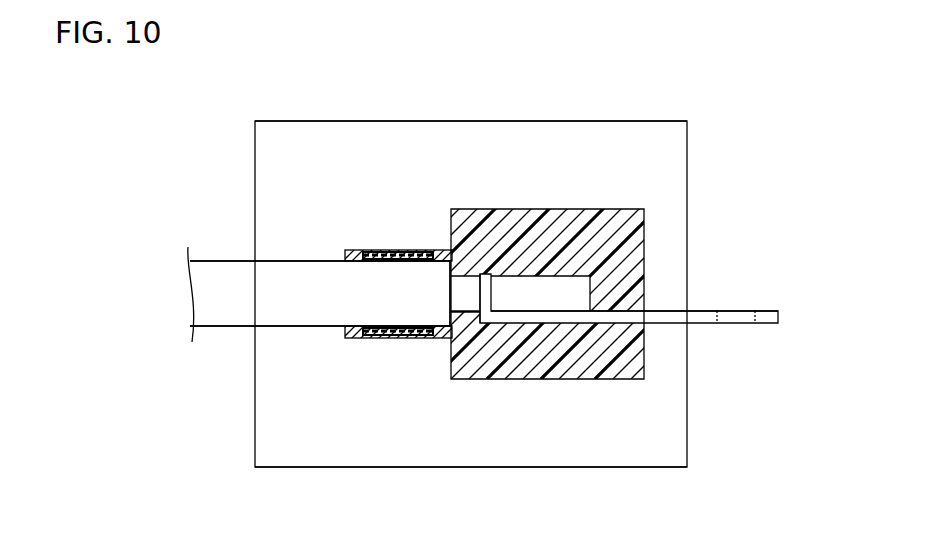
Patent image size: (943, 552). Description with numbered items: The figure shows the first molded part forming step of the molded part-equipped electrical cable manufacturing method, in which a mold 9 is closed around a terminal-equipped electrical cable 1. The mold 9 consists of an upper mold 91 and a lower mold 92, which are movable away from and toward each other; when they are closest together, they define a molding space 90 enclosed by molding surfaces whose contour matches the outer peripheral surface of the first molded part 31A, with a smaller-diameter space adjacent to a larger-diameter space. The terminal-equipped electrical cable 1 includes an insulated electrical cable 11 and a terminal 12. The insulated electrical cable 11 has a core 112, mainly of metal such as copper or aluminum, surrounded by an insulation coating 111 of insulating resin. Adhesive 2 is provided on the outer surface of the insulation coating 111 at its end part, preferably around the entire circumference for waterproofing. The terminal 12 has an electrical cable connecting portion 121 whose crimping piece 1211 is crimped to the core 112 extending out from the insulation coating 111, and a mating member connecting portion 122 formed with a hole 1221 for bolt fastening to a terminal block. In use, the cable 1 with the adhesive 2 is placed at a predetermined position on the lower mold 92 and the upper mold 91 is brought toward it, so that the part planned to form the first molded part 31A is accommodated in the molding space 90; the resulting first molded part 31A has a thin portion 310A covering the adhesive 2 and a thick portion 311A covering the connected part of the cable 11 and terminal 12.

The mold 9 is at (724, 54).
The upper mold 91 is at (688, 178).
The lower mold 92 is at (688, 400).
The molding space 90 is at (637, 228).
The terminal-equipped electrical cable 1 is at (171, 320).
The insulated electrical cable 11 is at (219, 333).
The insulation coating 111 is at (218, 261).
The core 112 is at (549, 285).
The adhesive 2 is at (383, 338).
The first molded part 31A is at (500, 85).
The thin portion 310A is at (423, 250).
The thick portion 311A is at (481, 209).
The terminal 12 is at (786, 323).
The electrical cable connecting portion 121 is at (525, 320).
The crimping piece 1211 is at (485, 298).
The mating member connecting portion 122 is at (707, 310).
The hole 1221 is at (749, 312).